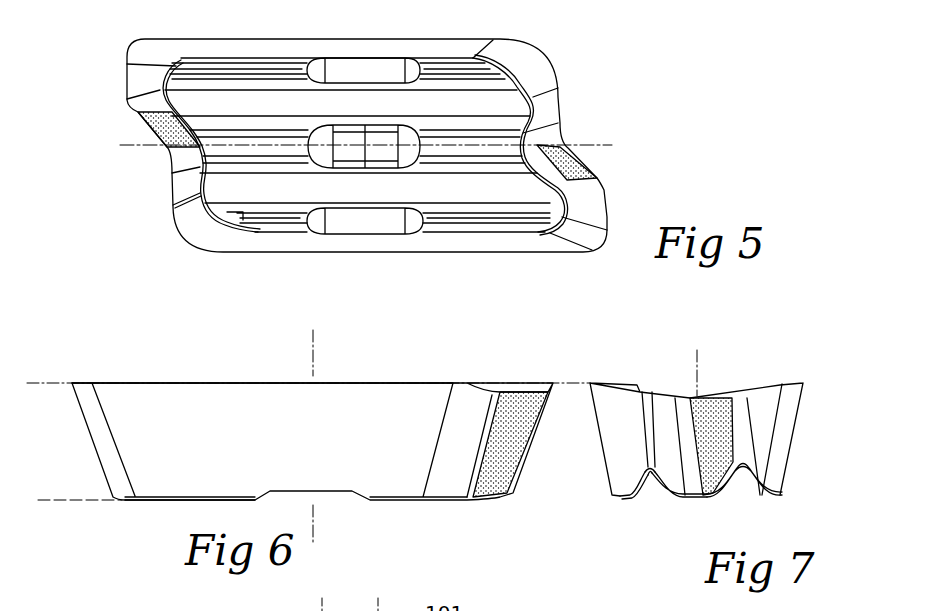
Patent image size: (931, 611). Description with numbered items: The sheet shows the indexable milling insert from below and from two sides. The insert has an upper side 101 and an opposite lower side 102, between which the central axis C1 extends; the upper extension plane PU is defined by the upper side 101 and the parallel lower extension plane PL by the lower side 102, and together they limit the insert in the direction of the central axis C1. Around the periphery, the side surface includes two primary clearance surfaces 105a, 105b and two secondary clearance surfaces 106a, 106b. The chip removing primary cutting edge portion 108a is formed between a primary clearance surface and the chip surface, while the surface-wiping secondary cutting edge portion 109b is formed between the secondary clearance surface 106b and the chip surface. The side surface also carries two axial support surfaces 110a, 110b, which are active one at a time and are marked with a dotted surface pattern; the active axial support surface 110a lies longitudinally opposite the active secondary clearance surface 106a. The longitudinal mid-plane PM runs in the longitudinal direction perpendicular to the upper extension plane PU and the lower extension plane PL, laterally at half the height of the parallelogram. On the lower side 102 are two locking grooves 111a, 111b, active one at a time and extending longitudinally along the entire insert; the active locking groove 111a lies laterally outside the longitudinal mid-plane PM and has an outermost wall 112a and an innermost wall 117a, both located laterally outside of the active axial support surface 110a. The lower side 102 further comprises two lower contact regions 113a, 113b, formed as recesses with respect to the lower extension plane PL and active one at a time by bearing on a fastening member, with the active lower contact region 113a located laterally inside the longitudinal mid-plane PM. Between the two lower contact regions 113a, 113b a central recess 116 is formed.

In FIG. 6, the upper side 101 is at (126, 362).
In FIG. 6, the lower side 102 is at (142, 530).
In FIG. 5, the primary clearance surface 105a is at (276, 47).
In FIG. 5, the primary clearance surface 105b is at (287, 247).
In FIG. 5, the secondary clearance surface 106a is at (132, 74).
In FIG. 5, the secondary clearance surface 106b is at (592, 213).
In FIG. 7, the secondary clearance surface 106b is at (766, 413).
In FIG. 6, the primary cutting edge portion 108a is at (178, 381).
In FIG. 7, the secondary cutting edge portion 109b is at (766, 382).
In FIG. 5, the axial support surface 110a is at (580, 158).
In FIG. 6, the axial support surface 110a is at (520, 424).
In FIG. 7, the axial support surface 110a is at (712, 410).
In FIG. 5, the axial support surface 110b is at (157, 138).
In FIG. 5, the locking groove 111a is at (487, 108).
In FIG. 7, the locking groove 111a is at (650, 478).
In FIG. 5, the locking groove 111b is at (487, 188).
In FIG. 7, the locking groove 111b is at (742, 478).
In FIG. 7, the outermost wall 112a is at (640, 488).
In FIG. 5, the lower contact region 113a is at (358, 228).
In FIG. 5, the lower contact region 113b is at (370, 70).
In FIG. 5, the central recess 116 is at (383, 133).
In FIG. 7, the innermost wall 117a is at (670, 488).
In FIG. 5, the longitudinal mid-plane PM is at (592, 147).
In FIG. 6, the upper extension plane PU is at (46, 382).
In FIG. 6, the lower extension plane PL is at (57, 502).
In FIG. 6, the central axis C1 is at (315, 336).
In FIG. 7, the central axis C1 is at (694, 360).